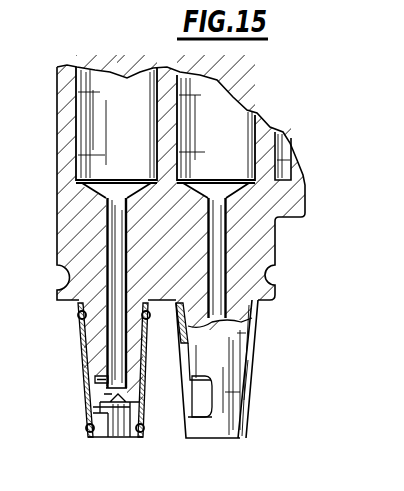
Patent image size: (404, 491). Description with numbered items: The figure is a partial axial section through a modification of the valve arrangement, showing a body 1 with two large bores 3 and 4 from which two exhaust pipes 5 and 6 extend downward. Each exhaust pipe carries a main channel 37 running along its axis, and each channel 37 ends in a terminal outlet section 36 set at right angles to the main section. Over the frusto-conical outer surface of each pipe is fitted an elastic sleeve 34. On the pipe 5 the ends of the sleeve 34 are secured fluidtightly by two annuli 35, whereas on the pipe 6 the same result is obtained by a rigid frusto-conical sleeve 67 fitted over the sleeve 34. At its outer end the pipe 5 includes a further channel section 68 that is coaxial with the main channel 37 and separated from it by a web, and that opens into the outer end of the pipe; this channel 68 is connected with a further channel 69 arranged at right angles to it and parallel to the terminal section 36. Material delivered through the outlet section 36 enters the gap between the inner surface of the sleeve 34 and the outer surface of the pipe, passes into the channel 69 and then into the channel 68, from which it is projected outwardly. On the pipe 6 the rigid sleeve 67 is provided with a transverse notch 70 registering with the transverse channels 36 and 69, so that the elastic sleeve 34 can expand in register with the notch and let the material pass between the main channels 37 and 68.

The body 1 is at (64, 163).
The first bore 3 is at (110, 72).
The second bore 4 is at (227, 107).
The channel 37 is at (115, 237).
The exhaust pipe 5 is at (97, 333).
The annuli 35 is at (78, 315).
The terminal outlet section 36 is at (95, 380).
The sleeve 34 is at (110, 397).
The further channel 69 is at (100, 409).
The further channel section 68 is at (117, 437).
The exhaust pipe 6 is at (256, 361).
The transverse notch 70 is at (192, 396).
The rigid sleeve 67 is at (246, 397).